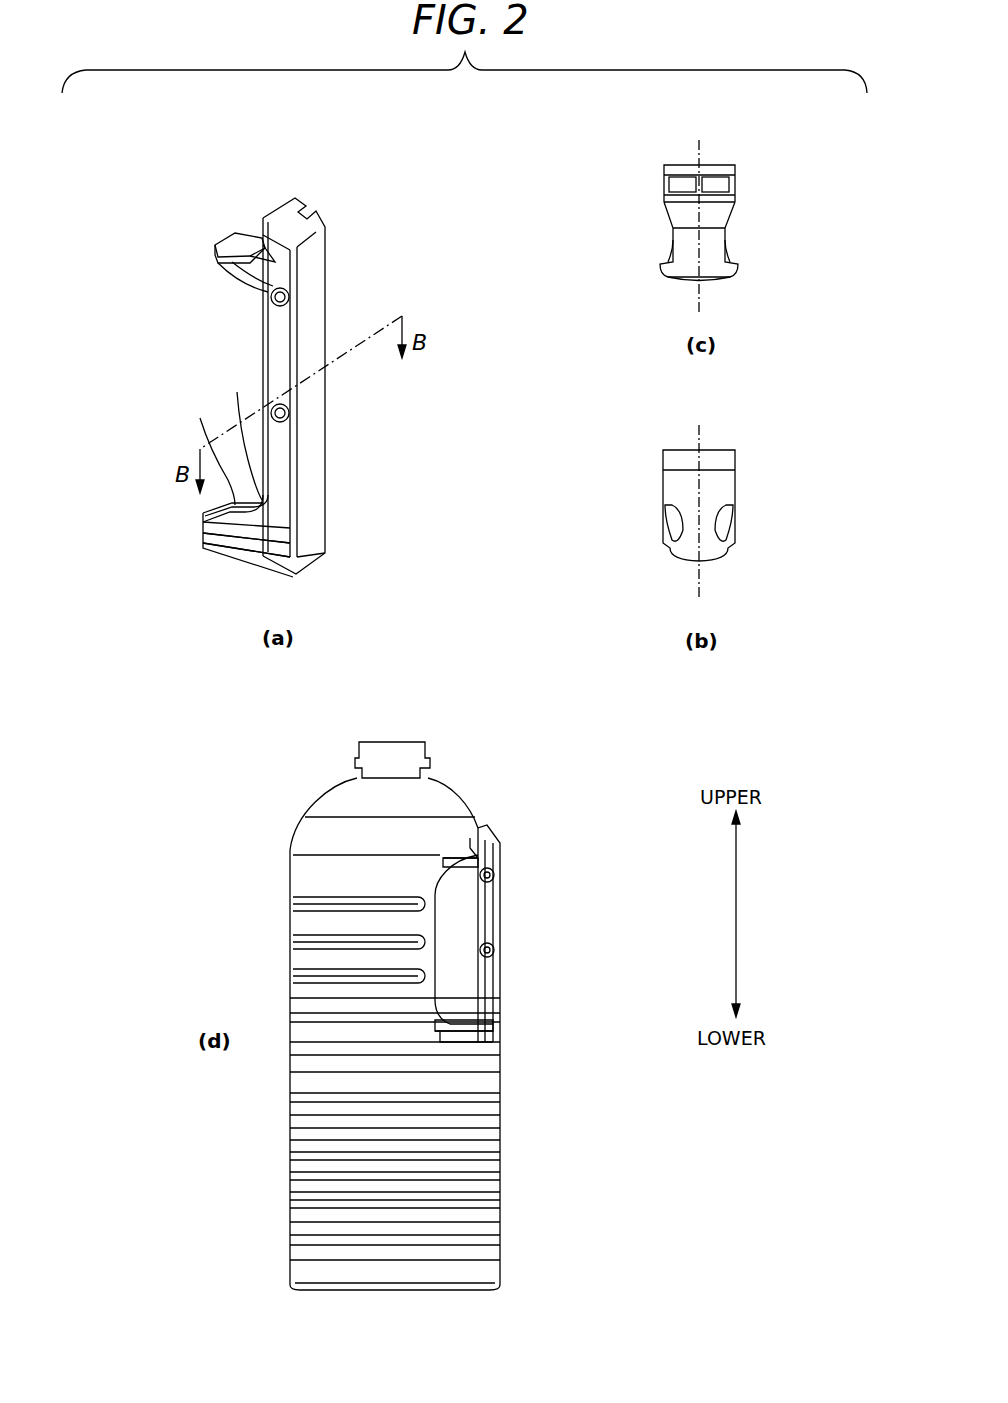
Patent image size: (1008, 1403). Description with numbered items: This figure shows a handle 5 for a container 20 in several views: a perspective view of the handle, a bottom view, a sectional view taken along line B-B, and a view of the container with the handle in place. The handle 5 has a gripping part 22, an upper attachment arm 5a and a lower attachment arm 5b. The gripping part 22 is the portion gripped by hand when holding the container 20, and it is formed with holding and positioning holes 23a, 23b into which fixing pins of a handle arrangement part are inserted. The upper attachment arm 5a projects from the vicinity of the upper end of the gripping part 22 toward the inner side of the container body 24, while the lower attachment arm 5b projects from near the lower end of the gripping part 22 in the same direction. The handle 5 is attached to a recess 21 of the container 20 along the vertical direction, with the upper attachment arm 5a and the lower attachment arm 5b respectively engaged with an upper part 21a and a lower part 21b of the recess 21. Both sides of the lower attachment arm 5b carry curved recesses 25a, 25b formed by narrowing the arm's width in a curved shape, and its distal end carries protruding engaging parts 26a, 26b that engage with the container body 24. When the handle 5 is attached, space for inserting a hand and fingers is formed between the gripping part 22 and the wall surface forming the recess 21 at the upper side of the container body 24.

The handle 5 is at (466, 603).
The upper attachment arm 5a is at (245, 243).
The lower attachment arm 5b is at (205, 508).
The container 20 is at (435, 995).
The recess 21 is at (555, 948).
The upper part of the recess 21a is at (440, 892).
The lower part of the recess 21b is at (445, 1032).
The gripping part 22 is at (310, 446).
The holding and positioning hole 23a is at (272, 301).
The holding and positioning hole 23b is at (288, 415).
The container body 24 is at (297, 912).
The curved recess 25a is at (222, 552).
The curved recess 25b is at (797, 520).
The protruding engaging part 26a is at (210, 540).
The protruding engaging part 26b is at (800, 574).